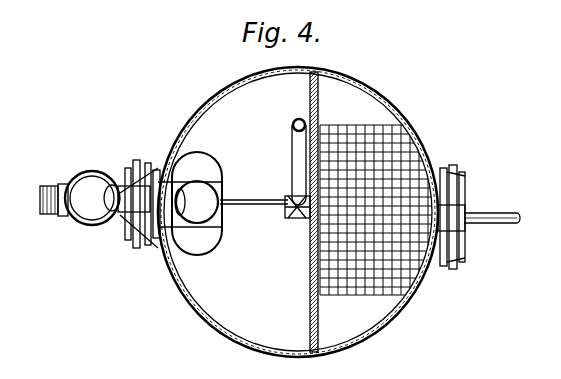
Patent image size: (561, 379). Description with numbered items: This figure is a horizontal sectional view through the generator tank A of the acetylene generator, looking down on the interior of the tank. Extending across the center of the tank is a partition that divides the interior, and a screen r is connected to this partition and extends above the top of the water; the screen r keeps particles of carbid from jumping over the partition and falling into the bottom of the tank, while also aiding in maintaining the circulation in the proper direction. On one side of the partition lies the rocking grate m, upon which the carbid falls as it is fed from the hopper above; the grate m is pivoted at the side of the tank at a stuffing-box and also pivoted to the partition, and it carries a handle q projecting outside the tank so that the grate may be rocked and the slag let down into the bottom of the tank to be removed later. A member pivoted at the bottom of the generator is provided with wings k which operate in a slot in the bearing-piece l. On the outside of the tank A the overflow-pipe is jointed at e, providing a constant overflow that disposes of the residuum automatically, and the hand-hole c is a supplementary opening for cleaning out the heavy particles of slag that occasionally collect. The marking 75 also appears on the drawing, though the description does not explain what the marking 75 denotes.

The spherical casing / shell A is at (400, 109).
The partition plate r is at (318, 313).
The wire-gauze screen m is at (372, 286).
The rod / cylinder l is at (292, 236).
The connecting rod k is at (266, 212).
The left flange coupling e is at (130, 226).
The right flange c is at (456, 246).
The shaft / spindle q is at (506, 222).
The figure marking 75 is at (353, 102).